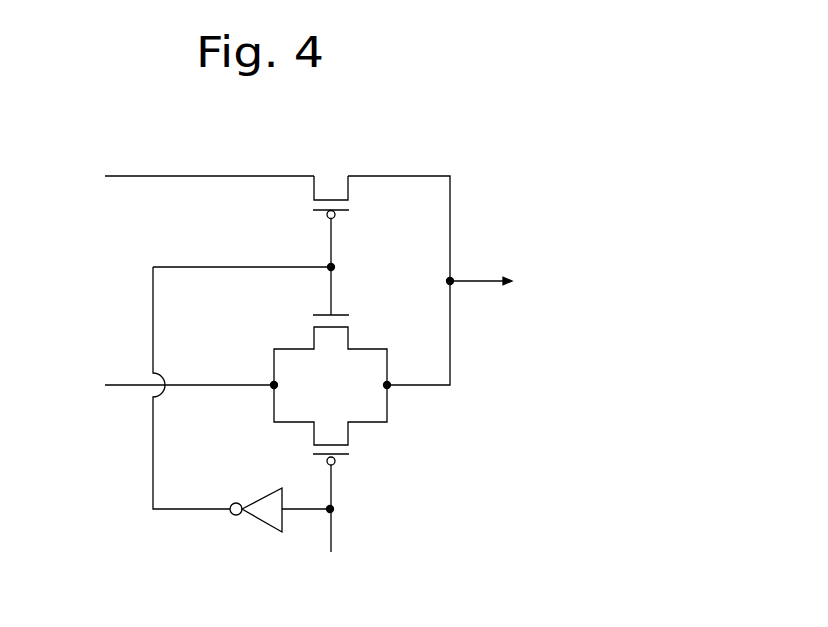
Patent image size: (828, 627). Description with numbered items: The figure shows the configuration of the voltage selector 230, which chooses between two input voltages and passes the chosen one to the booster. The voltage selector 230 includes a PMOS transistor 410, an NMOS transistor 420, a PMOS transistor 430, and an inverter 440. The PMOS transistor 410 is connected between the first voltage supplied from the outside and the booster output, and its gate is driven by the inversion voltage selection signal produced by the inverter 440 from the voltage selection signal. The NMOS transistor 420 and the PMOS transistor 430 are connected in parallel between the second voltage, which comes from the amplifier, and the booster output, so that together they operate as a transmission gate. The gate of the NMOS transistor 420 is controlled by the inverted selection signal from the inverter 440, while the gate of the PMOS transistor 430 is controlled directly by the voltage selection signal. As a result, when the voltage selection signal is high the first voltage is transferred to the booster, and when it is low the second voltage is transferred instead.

The voltage selector 230 is at (463, 128).
The PMOS transistor 410 is at (331, 208).
The NMOS transistor 420 is at (330, 326).
The PMOS transistor 430 is at (330, 425).
The inverter 440 is at (263, 493).